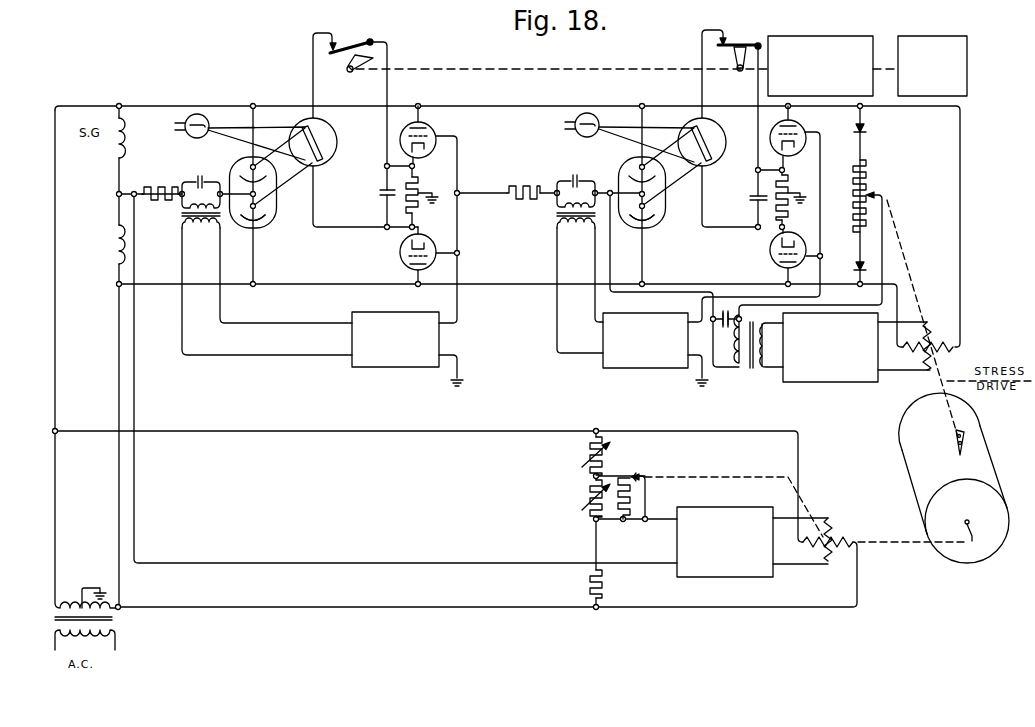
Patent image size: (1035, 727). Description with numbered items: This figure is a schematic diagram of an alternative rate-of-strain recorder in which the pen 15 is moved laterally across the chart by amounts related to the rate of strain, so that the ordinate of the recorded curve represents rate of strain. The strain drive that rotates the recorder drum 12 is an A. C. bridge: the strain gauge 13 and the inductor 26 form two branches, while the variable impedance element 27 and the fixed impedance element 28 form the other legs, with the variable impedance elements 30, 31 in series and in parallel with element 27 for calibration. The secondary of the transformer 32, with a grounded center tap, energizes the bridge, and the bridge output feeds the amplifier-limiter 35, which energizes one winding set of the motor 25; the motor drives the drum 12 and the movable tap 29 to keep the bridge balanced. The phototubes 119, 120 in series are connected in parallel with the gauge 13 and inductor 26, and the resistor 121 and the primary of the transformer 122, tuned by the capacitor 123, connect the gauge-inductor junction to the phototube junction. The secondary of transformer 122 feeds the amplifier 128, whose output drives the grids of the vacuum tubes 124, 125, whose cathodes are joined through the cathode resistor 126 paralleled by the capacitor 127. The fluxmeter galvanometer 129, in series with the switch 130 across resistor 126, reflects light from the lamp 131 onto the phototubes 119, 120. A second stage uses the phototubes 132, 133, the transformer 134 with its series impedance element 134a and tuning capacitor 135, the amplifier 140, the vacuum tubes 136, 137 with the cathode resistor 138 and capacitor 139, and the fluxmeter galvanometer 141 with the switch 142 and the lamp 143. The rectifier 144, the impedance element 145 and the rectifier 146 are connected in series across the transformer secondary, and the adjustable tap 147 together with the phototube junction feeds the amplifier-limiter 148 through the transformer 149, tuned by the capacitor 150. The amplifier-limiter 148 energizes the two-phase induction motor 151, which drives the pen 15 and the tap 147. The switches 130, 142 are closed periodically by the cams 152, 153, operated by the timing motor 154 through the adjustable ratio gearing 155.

The drum 12 is at (996, 549).
The strain gauge 13 is at (127, 133).
The pen 15 is at (956, 452).
The motor 25 is at (838, 534).
The inductor 26 is at (113, 242).
The variable impedance element 27 is at (629, 520).
The fixed impedance element 28 is at (603, 590).
The movable tap 29 is at (645, 470).
The variable impedance element 30 is at (590, 451).
The variable impedance element 31 is at (590, 498).
The transformer 32 is at (53, 626).
The amplifier-limiter 35 is at (722, 577).
The phototube 119 is at (238, 168).
The phototube 120 is at (271, 223).
The resistor 121 is at (157, 186).
The transformer 122 is at (180, 218).
The capacitor 123 is at (198, 176).
The vacuum tube 124 is at (431, 128).
The vacuum tube 125 is at (400, 263).
The cathode resistor 126 is at (419, 176).
The capacitor 127 is at (379, 195).
The amplifier 128 is at (397, 367).
The fluxmeter galvanometer 129 is at (333, 126).
The switch 130 is at (352, 47).
The lamp 131 is at (209, 121).
The phototube 132 is at (627, 167).
The phototube 133 is at (660, 223).
The transformer 134 is at (556, 216).
The impedance element 134a is at (525, 181).
The capacitor 135 is at (576, 175).
The vacuum tube 136 is at (801, 126).
The vacuum tube 137 is at (774, 263).
The cathode resistor 138 is at (791, 190).
The capacitor 139 is at (751, 194).
The amplifier 140 is at (645, 368).
The fluxmeter galvanometer 141 is at (718, 127).
The switch 142 is at (741, 42).
The lamp 143 is at (599, 122).
The rectifier 144 is at (868, 130).
The impedance element 145 is at (866, 160).
The rectifier 146 is at (857, 268).
The adjustable tap 147 is at (884, 194).
The amplifier-limiter 148 is at (838, 382).
The transformer 149 is at (751, 370).
The capacitor 150 is at (726, 330).
The two-phase induction motor 151 is at (934, 335).
The cam 152 is at (361, 76).
The cam 153 is at (737, 72).
The timing motor 154 is at (933, 36).
The adjustable ratio gearing 155 is at (830, 36).